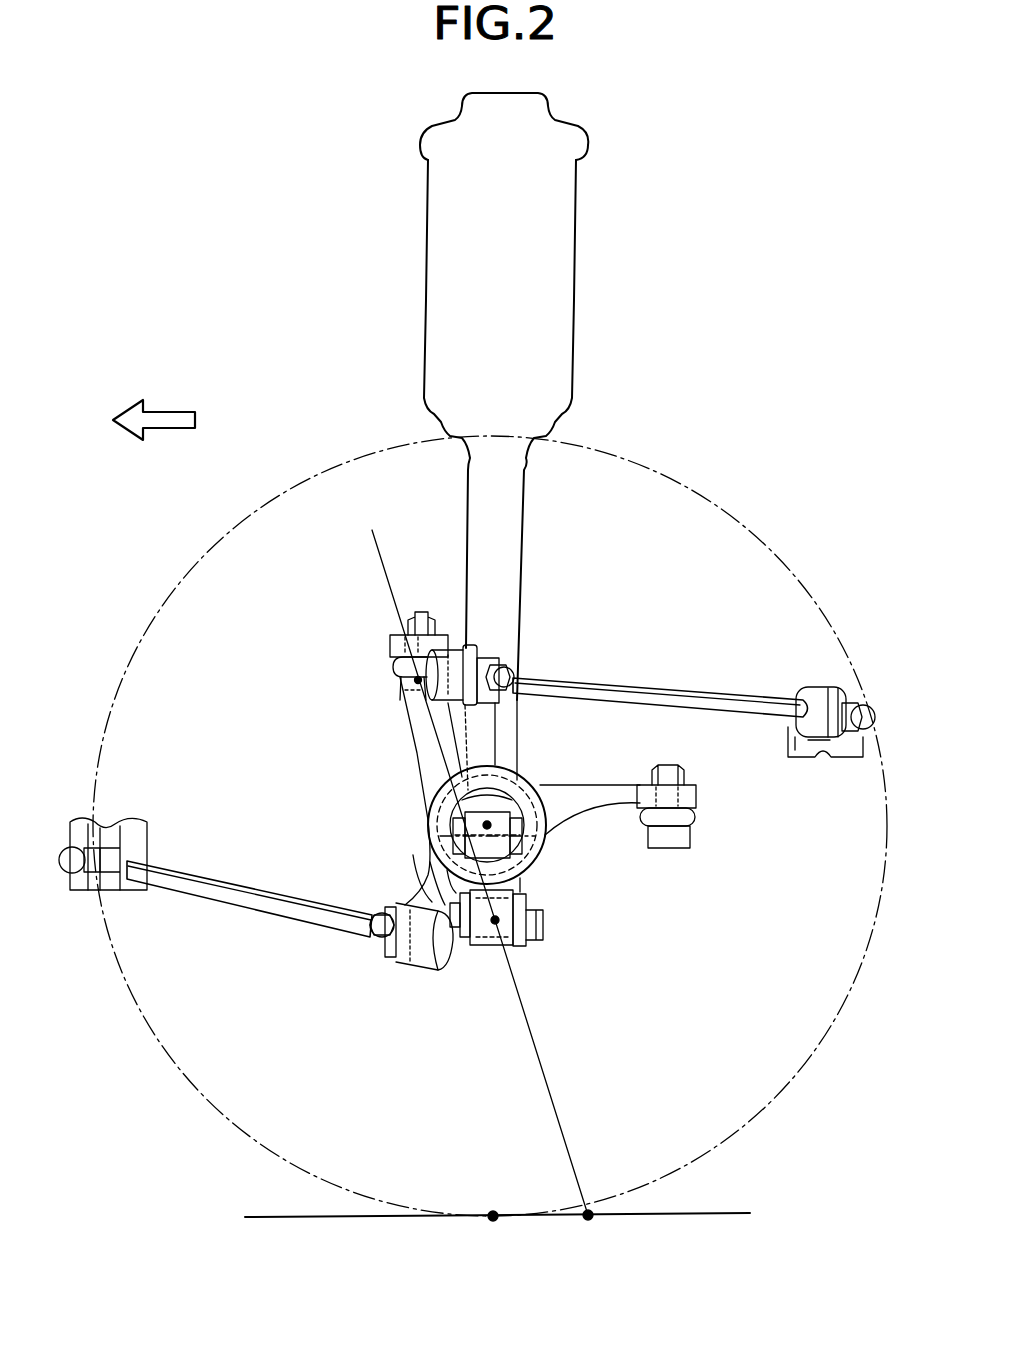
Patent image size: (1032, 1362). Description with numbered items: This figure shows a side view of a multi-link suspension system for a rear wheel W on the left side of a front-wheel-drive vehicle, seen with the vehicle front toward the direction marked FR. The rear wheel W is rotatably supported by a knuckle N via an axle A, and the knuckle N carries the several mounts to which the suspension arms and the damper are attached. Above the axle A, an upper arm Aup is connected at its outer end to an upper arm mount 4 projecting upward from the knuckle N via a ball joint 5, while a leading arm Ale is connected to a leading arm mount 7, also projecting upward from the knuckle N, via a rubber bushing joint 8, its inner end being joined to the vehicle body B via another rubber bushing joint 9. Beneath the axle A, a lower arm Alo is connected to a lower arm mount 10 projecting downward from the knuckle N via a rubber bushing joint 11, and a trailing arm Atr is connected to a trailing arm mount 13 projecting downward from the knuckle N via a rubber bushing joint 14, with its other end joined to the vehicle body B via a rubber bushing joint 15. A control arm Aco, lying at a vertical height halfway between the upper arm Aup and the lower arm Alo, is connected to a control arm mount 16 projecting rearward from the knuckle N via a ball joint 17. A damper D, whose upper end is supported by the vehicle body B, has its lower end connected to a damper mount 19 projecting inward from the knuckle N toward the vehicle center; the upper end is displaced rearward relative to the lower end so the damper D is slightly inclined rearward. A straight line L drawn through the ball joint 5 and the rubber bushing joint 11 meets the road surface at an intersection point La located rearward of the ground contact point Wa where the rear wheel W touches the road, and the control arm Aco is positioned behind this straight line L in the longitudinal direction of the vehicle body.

The upper arm mount 4 is at (413, 743).
The ball joint 5 is at (385, 680).
The leading arm mount 7 is at (490, 740).
The rubber bushing joint 8 is at (480, 645).
The rubber bushing joint 9 is at (818, 686).
The lower arm mount 10 is at (520, 893).
The rubber bushing joint 11 is at (490, 950).
The trailing arm mount 13 is at (412, 893).
The rubber bushing joint 14 is at (415, 967).
The rubber bushing joint 15 is at (125, 893).
The control arm mount 16 is at (580, 795).
The ball joint 17 is at (698, 827).
The damper mount 19 is at (463, 848).
The damper D is at (568, 268).
The rear wheel W is at (675, 470).
The knuckle N is at (418, 780).
The axle A is at (490, 823).
The vehicle body B is at (842, 765).
The straight line L is at (540, 1063).
The intersection point La is at (589, 1222).
The ground contact point Wa is at (492, 1222).
The upper arm Aup is at (390, 644).
The leading arm Ale is at (637, 690).
The trailing arm Atr is at (252, 890).
The lower arm Alo is at (540, 935).
The control arm Aco is at (652, 848).
The forward direction FR is at (178, 420).